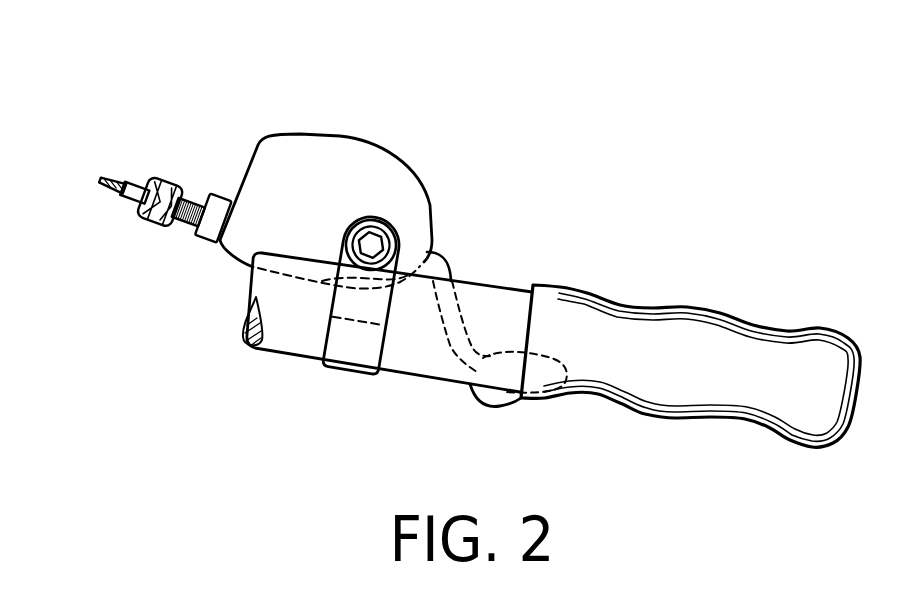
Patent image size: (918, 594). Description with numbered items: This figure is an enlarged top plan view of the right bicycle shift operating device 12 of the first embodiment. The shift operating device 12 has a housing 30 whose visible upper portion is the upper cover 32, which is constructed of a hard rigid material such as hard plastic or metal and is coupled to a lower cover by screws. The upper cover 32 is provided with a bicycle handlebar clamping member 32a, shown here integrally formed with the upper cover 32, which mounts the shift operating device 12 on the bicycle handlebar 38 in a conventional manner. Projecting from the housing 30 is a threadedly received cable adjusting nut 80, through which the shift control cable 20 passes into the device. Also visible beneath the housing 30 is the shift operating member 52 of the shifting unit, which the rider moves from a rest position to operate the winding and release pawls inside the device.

The bicycle shift operating device 12 is at (444, 188).
The shift control cable 20 is at (134, 185).
The housing 30 is at (353, 131).
The upper cover 32 is at (385, 177).
The bicycle handlebar clamping member 32a is at (358, 360).
The bicycle handlebar 38 is at (298, 340).
The shift operating member 52 is at (480, 410).
The cable adjusting nut 80 is at (160, 228).